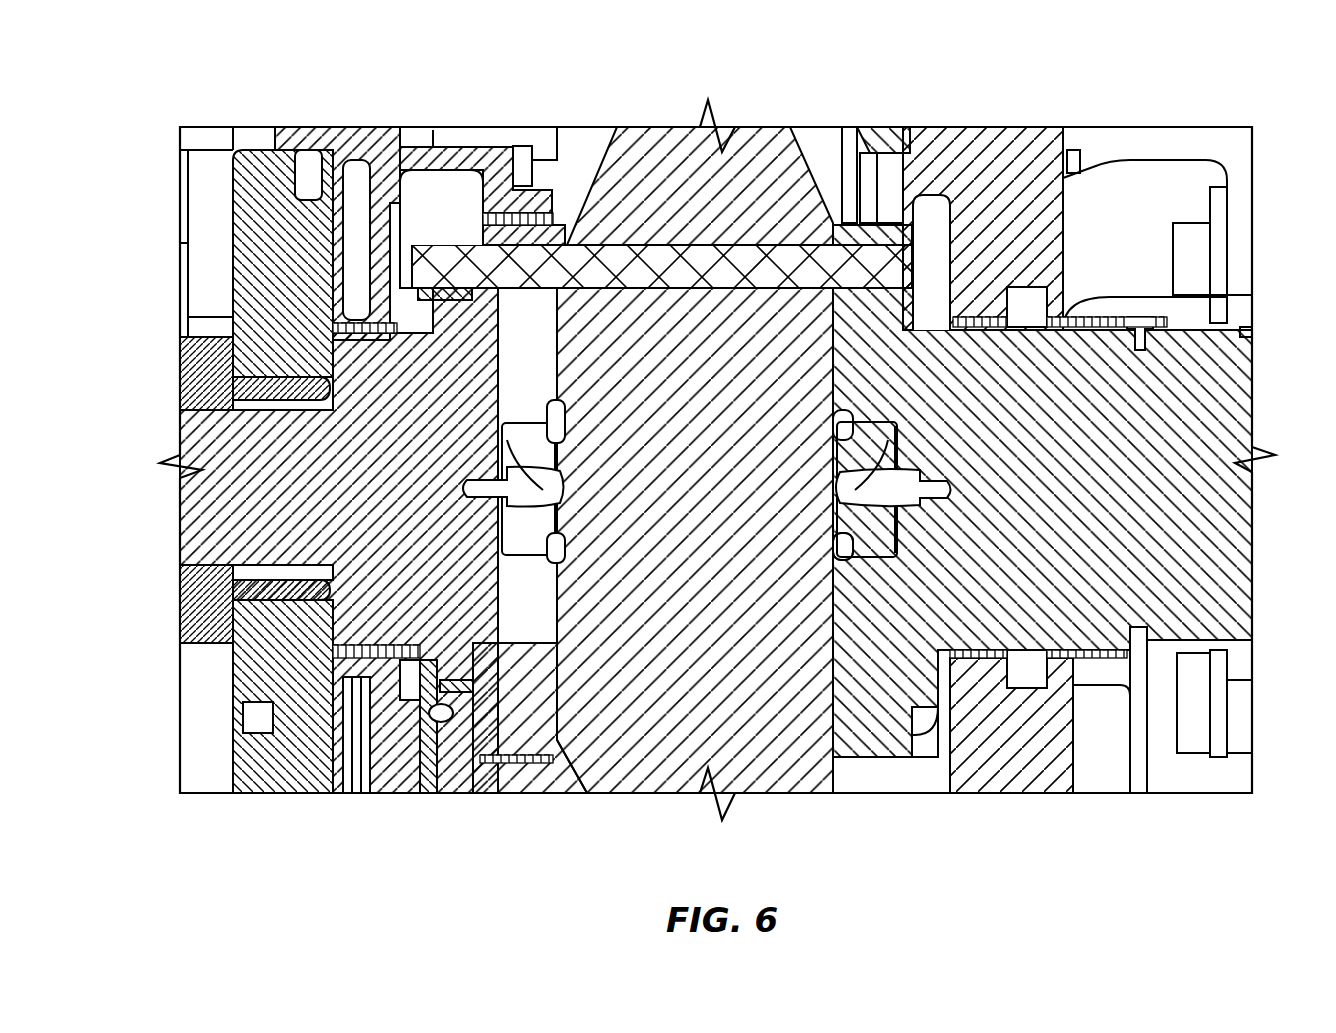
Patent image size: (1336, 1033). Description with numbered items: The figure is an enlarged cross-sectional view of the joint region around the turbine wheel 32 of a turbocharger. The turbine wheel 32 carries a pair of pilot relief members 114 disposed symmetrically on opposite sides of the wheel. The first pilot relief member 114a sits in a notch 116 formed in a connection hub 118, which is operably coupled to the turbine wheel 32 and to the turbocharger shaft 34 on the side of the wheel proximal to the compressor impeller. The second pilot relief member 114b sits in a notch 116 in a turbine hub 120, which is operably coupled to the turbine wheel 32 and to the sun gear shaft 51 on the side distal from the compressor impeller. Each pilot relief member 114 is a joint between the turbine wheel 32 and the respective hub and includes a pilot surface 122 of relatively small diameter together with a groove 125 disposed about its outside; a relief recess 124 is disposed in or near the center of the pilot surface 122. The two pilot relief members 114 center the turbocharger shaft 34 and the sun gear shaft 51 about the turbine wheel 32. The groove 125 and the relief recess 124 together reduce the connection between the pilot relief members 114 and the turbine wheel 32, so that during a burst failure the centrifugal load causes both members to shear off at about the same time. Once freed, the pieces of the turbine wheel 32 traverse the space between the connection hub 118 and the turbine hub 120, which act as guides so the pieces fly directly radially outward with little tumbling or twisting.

The turbine wheel 32 is at (657, 742).
The turbocharger shaft 34 is at (218, 487).
The sun gear shaft 51 is at (1195, 382).
The pilot relief member 114 is at (754, 296).
The first pilot relief member 114a is at (523, 422).
The second pilot relief member 114b is at (895, 422).
The notch 116 is at (843, 420).
The connection hub 118 is at (503, 612).
The turbine hub 120 is at (871, 655).
The pilot surface 122 is at (472, 548).
The relief recess 124 is at (497, 477).
The groove 125 is at (567, 330).